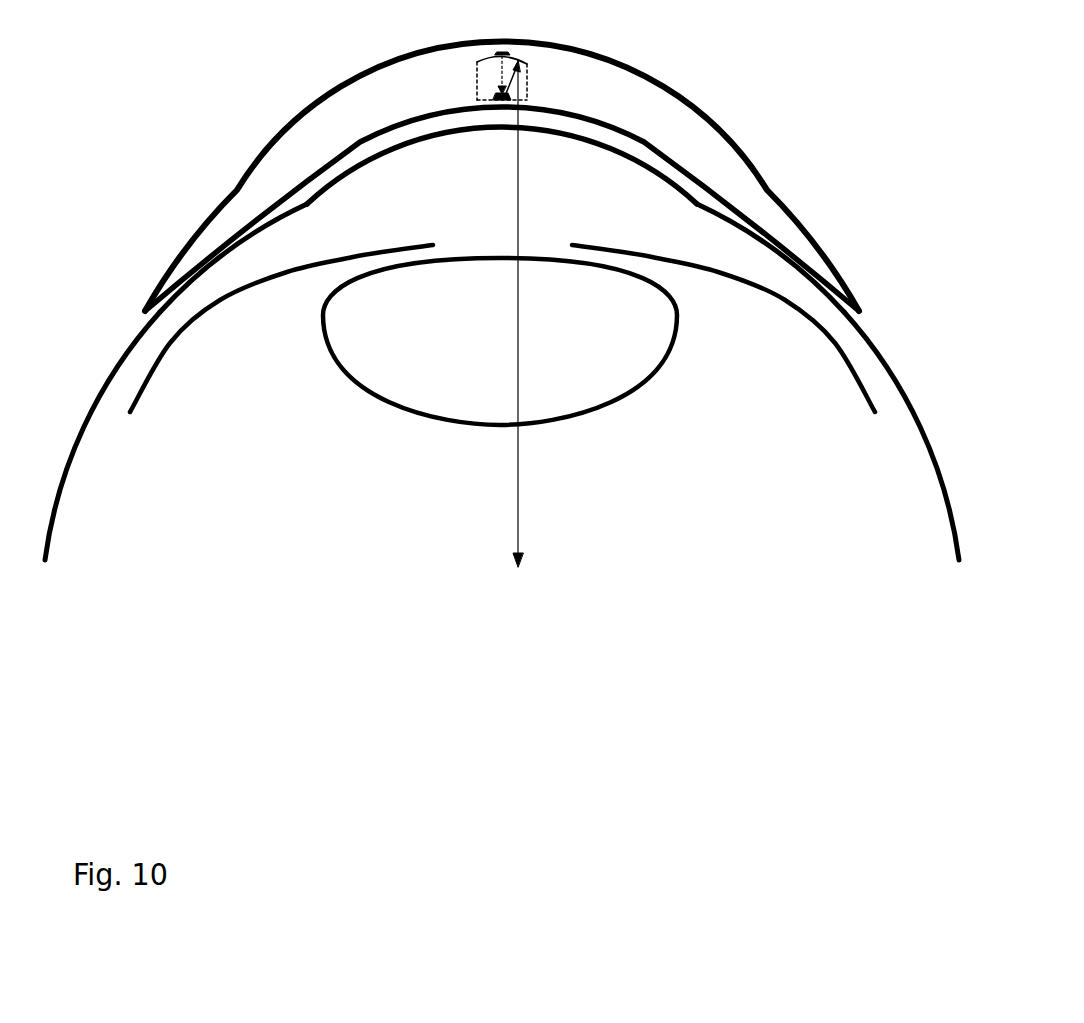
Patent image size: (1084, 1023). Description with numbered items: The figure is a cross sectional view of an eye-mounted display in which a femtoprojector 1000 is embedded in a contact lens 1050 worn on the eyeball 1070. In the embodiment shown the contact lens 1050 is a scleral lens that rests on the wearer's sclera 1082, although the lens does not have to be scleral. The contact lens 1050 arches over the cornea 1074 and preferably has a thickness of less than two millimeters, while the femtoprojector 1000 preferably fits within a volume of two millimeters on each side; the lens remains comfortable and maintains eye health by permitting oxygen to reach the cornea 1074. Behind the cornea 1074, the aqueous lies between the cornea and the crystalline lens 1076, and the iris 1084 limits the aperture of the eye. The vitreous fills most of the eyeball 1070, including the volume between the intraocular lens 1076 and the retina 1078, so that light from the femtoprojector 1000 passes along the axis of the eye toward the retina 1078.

The femtoprojector 1000 is at (531, 73).
The contact lens 1050 is at (502, 176).
The cornea 1074 is at (500, 180).
The sclera 1082 is at (498, 269).
The iris 1084 is at (658, 241).
The crystalline lens 1076 is at (500, 356).
The eyeball 1070 is at (776, 498).
The retina 1078 is at (523, 331).